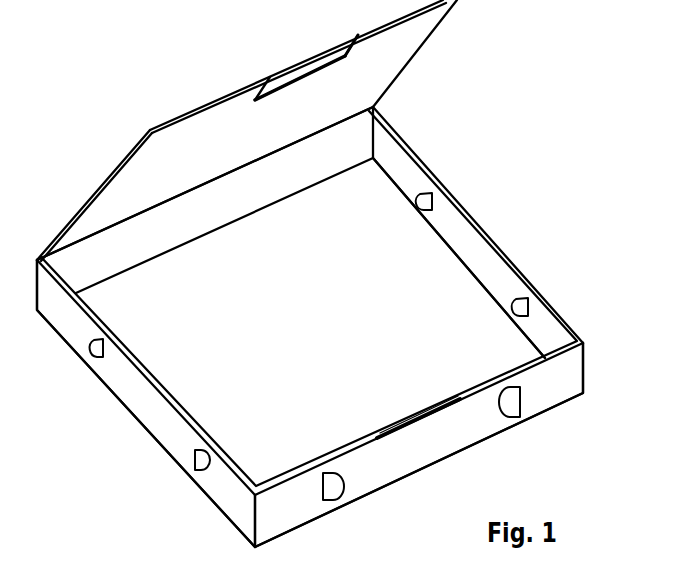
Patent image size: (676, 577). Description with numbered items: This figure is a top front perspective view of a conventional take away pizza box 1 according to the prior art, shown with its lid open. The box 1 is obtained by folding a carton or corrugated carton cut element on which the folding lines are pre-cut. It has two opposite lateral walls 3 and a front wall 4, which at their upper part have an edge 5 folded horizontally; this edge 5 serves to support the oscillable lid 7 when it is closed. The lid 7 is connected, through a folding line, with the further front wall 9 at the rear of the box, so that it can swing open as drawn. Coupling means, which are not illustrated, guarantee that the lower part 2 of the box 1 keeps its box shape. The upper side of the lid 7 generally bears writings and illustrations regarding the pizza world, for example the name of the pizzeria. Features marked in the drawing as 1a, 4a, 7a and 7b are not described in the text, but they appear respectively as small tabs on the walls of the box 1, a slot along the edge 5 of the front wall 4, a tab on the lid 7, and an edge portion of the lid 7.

The box 1 is at (500, 164).
The projections/tabs 1a is at (90, 358).
The lower part 2 is at (355, 337).
The lateral walls 3 is at (157, 445).
The front wall 4 is at (443, 447).
The slot 4a is at (400, 420).
The edge 5 is at (426, 165).
The lid 7 is at (170, 150).
The lid tab 7a is at (312, 70).
The lid flap edge 7b is at (97, 190).
The further front wall 9 is at (135, 247).